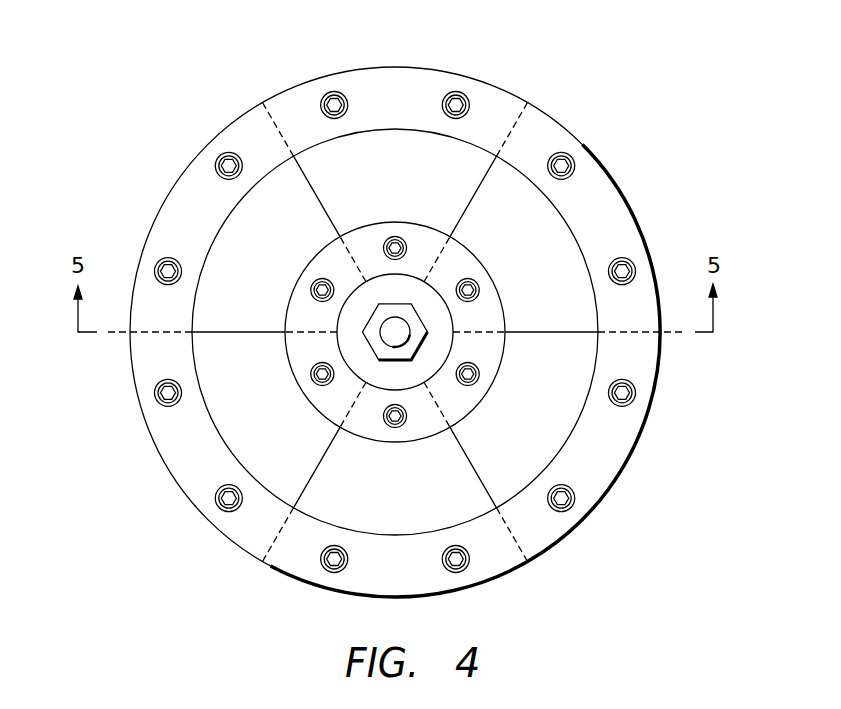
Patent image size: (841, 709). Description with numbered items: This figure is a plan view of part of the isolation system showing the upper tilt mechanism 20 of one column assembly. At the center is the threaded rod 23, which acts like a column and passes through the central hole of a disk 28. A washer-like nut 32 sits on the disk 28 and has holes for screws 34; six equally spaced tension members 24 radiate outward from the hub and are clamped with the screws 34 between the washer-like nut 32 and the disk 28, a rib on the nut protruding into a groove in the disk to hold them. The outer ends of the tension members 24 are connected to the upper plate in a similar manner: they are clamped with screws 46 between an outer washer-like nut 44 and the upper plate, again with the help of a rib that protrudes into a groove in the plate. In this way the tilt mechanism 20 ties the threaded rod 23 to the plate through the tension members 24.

The upper tilt mechanism 20 is at (490, 255).
The threaded rod 23 is at (395, 317).
The tension members 24 is at (302, 170).
The disk 28 is at (440, 346).
The washer-like nut 32 is at (482, 400).
The screws 34 is at (479, 287).
The washer-like nut 44 is at (598, 196).
The screws 46 is at (636, 392).